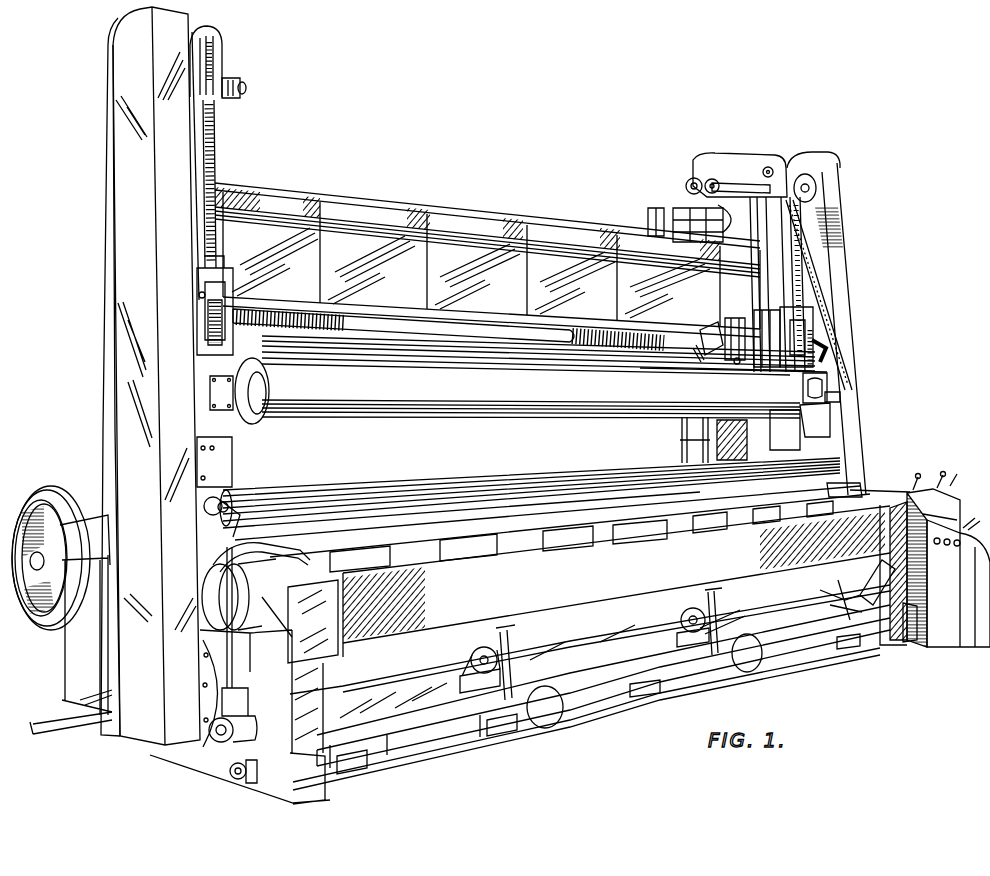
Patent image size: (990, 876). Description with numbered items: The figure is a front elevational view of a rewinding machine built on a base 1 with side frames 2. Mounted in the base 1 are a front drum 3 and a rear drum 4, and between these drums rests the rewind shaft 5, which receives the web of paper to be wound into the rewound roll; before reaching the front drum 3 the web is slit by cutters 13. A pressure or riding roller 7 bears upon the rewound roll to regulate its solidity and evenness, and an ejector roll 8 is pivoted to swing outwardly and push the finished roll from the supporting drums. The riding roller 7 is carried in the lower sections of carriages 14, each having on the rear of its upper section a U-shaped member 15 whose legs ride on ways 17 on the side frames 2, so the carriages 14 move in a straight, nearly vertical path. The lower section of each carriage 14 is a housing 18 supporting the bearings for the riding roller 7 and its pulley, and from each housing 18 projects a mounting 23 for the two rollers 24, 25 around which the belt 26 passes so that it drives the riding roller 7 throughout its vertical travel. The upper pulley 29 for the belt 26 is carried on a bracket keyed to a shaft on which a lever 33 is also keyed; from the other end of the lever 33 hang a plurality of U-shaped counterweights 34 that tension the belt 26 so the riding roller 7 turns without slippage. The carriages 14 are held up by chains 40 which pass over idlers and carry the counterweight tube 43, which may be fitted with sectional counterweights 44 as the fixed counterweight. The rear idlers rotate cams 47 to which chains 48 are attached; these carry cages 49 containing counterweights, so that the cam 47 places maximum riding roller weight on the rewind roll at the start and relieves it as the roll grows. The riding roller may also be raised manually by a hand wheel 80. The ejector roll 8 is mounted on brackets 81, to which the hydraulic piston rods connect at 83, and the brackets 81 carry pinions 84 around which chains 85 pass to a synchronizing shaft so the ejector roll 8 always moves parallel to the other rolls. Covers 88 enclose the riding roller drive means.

The base 1 is at (212, 738).
The side frames 2 is at (102, 273).
The front drum 3 is at (621, 497).
The rear drum 4 is at (487, 523).
The rewind shaft 5 is at (386, 490).
The riding roller 7 is at (525, 380).
The ejector roll 8 is at (556, 472).
The cutters 13 is at (480, 650).
The carriages 14 is at (203, 340).
The U-shaped member 15 is at (767, 361).
The ways 17 is at (760, 278).
The housing 18 is at (235, 385).
The mounting 23 is at (833, 397).
The roller 24 is at (826, 347).
The roller 25 is at (832, 426).
The belt 26 is at (824, 285).
The upper pulley 29 is at (816, 189).
The lever 33 is at (240, 86).
The U-shaped counterweights 34 is at (692, 228).
The chains 40 is at (208, 54).
The counterweight tube 43 is at (444, 333).
The sectional counterweights 44 is at (323, 312).
The cams 47 is at (719, 226).
The chains 48 is at (687, 181).
The cages 49 is at (658, 210).
The hand wheel 80 is at (60, 489).
The brackets 81 is at (726, 437).
The connection point 83 is at (737, 366).
The pinions 84 is at (698, 363).
The chains 85 is at (708, 328).
The covers 88 is at (124, 237).